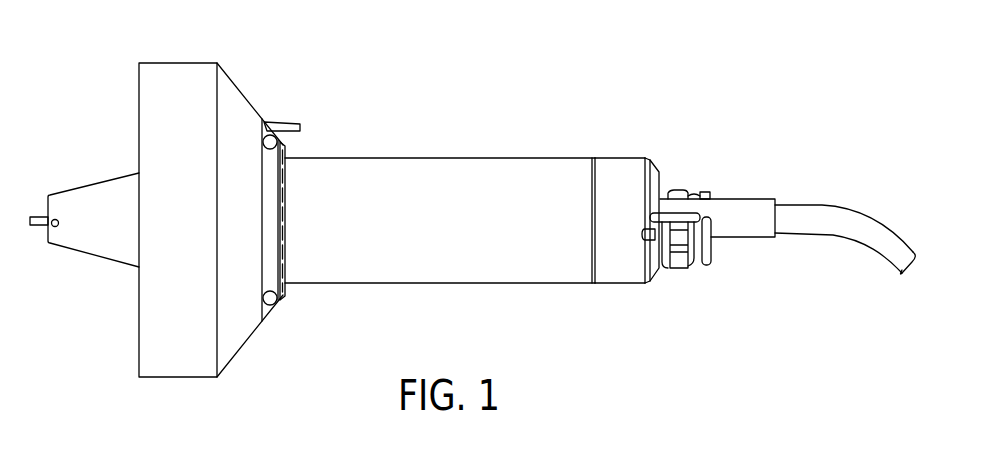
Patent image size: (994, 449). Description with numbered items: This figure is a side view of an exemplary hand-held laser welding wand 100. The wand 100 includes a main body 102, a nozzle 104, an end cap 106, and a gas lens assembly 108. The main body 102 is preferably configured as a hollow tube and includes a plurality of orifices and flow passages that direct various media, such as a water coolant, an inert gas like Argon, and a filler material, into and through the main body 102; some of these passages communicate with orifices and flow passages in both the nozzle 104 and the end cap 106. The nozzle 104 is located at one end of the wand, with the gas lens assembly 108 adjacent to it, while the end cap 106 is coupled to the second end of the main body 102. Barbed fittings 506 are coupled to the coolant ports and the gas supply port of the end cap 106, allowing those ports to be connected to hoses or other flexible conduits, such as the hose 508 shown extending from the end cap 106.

The hand-held laser welding wand 100 is at (768, 81).
The main body 102 is at (403, 157).
The nozzle 104 is at (101, 182).
The end cap 106 is at (621, 156).
The gas lens assembly 108 is at (254, 94).
The barbed fitting 506 is at (683, 189).
The hose 508 is at (815, 204).